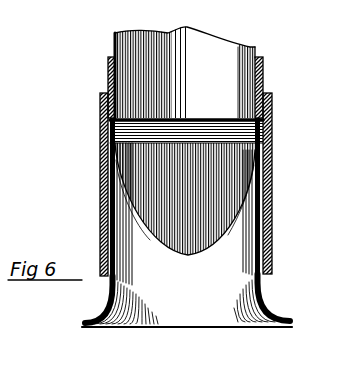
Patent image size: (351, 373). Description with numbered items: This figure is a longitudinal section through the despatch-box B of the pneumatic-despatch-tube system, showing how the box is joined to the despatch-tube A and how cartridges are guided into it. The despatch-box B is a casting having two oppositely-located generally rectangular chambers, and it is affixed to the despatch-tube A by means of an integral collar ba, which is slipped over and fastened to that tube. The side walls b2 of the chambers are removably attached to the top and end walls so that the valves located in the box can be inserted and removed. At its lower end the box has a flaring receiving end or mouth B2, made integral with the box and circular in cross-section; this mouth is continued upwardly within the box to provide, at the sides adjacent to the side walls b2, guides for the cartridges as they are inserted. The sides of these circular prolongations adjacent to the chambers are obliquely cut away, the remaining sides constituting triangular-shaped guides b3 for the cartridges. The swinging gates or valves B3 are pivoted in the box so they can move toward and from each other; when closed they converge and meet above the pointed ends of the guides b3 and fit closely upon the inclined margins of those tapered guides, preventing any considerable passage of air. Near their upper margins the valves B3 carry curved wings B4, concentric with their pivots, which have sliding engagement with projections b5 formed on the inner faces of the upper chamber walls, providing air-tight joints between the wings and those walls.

The despatch-tube A is at (240, 12).
The integral collar ba is at (107, 68).
The side walls b2 is at (100, 168).
The despatch-box B is at (63, 222).
The curved wings B4 is at (202, 130).
The projections b5 is at (179, 116).
The swinging gates or valves B3 is at (178, 198).
The triangular-shaped guides b3 is at (130, 203).
The flaring receiving end or mouth B2 is at (283, 306).